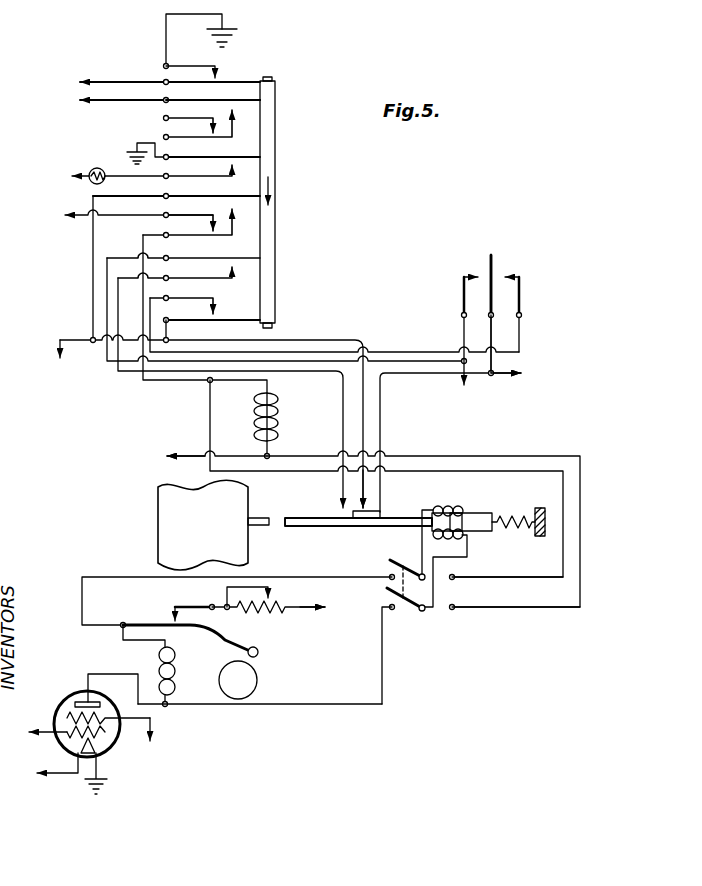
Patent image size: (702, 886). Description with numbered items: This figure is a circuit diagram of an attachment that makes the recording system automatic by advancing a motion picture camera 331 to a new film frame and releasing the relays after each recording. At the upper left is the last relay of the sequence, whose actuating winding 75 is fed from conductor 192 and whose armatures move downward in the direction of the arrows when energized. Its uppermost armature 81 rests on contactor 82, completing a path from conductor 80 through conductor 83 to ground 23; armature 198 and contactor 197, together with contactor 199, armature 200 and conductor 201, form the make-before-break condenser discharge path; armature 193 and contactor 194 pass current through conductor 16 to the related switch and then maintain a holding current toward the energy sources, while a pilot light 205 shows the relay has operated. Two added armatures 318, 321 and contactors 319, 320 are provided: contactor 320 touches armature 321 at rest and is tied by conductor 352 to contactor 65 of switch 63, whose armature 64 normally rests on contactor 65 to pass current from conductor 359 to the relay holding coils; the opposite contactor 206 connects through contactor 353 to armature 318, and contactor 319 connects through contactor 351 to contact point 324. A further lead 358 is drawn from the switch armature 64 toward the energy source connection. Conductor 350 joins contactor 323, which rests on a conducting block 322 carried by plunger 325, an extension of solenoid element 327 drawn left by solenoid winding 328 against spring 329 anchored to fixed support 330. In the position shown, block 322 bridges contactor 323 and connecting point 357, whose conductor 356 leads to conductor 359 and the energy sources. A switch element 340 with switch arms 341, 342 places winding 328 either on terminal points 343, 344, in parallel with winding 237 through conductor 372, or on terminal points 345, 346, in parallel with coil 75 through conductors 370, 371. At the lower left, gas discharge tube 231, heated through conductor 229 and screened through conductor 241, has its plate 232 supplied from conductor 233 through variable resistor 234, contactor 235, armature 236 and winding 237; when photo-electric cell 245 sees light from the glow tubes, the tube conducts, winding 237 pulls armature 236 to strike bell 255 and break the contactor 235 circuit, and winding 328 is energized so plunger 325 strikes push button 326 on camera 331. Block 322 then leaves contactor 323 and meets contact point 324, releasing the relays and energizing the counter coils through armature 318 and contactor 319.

The conductor 16 is at (78, 220).
The ground 23 is at (238, 32).
The switch 63 is at (488, 260).
The switch armature 64 is at (494, 258).
The contactor 65 is at (535, 262).
The actuating winding 75 is at (279, 420).
The conductor 80 is at (112, 80).
The uppermost armature 81 is at (259, 80).
The contactor 82 is at (220, 74).
The conductor 83 is at (166, 40).
The conductor 192 is at (188, 456).
The armature 193 is at (150, 244).
The contactor 194 is at (222, 232).
The contactor 197 is at (210, 130).
The relay armature 198 is at (232, 140).
The contactor 199 is at (242, 108).
The armature 200 is at (250, 98).
The conductor 201 is at (112, 98).
The pilot light 205 is at (88, 182).
The contactor 206 is at (462, 272).
The conductor 229 is at (55, 771).
The gas discharge tube 231 is at (65, 700).
The anode or plate element 232 is at (82, 700).
The conductor 233 is at (318, 617).
The variable resistor 234 is at (272, 600).
The contactor 235 is at (172, 615).
The armature 236 is at (243, 647).
The winding 237 is at (176, 660).
The conductor 241 is at (152, 735).
The photo-electric cell 245 is at (33, 721).
The bell 255 is at (258, 680).
The armature 318 is at (250, 258).
The contactor 319 is at (242, 272).
The contactor 320 is at (225, 305).
The armature 321 is at (246, 320).
The conducting block 322 is at (367, 525).
The contactor 323 is at (365, 508).
The contact point 324 is at (325, 516).
The plunger element 325 is at (318, 527).
The push button 326 is at (262, 527).
The solenoid element 327 is at (480, 532).
The solenoid winding 328 is at (455, 509).
The spring 329 is at (512, 519).
The fixed support 330 is at (548, 516).
The camera 331 is at (158, 493).
The switch element 340 is at (428, 598).
The switch arm 341 is at (403, 533).
The switch arm 342 is at (414, 601).
The terminal point 343 is at (333, 601).
The terminal point 344 is at (392, 612).
The terminal point 345 is at (455, 578).
The terminal point 346 is at (455, 609).
The conductor 350 is at (345, 338).
The contactor 351 is at (332, 370).
The conductor 352 is at (390, 350).
The contactor 353 is at (415, 350).
The conductor 356 is at (386, 380).
The connecting point 357 is at (378, 516).
The conductor 358 is at (492, 333).
The conductor 359 is at (508, 371).
The conductor 370 is at (317, 475).
The conductor 371 is at (300, 457).
The conductor 372 is at (115, 576).